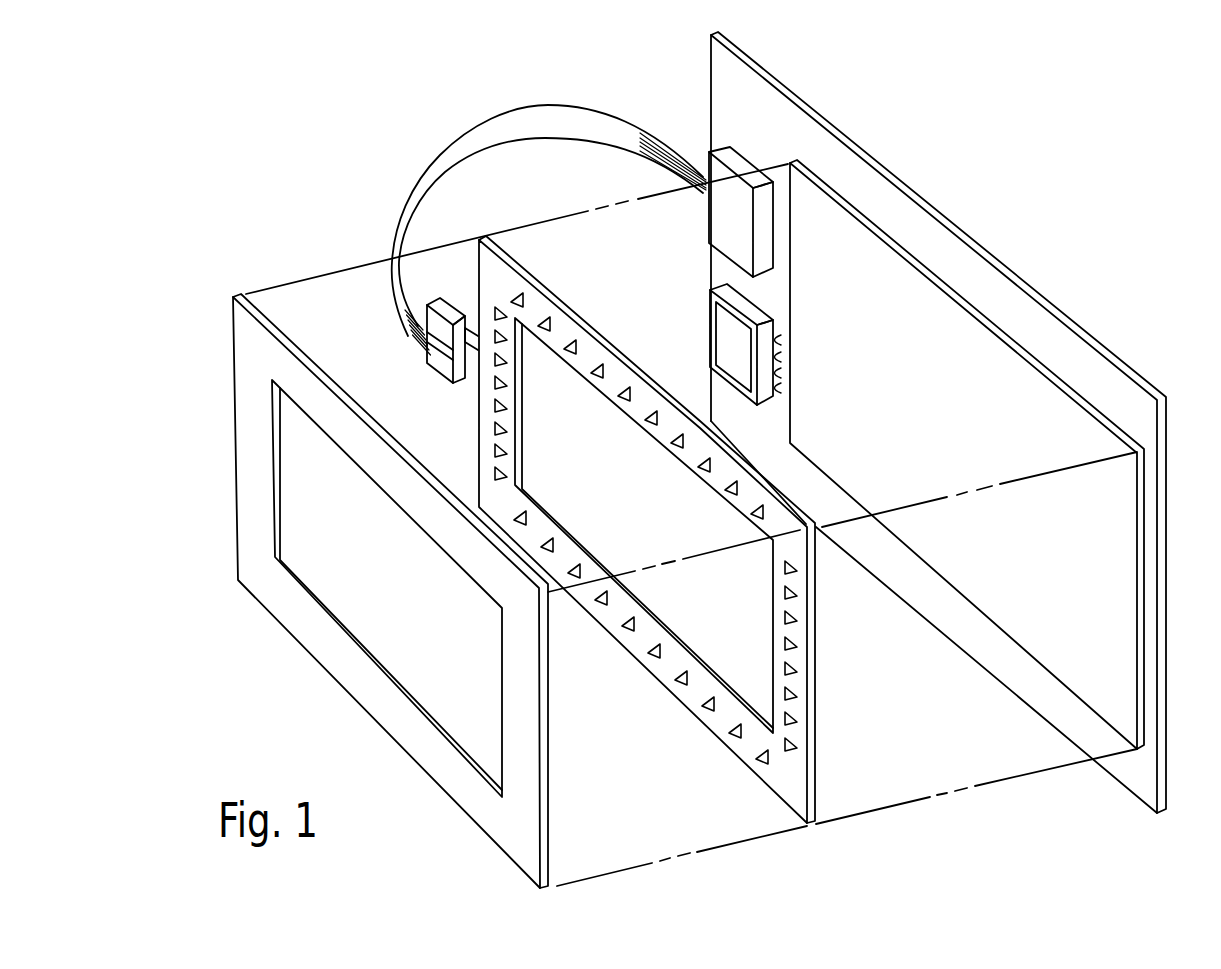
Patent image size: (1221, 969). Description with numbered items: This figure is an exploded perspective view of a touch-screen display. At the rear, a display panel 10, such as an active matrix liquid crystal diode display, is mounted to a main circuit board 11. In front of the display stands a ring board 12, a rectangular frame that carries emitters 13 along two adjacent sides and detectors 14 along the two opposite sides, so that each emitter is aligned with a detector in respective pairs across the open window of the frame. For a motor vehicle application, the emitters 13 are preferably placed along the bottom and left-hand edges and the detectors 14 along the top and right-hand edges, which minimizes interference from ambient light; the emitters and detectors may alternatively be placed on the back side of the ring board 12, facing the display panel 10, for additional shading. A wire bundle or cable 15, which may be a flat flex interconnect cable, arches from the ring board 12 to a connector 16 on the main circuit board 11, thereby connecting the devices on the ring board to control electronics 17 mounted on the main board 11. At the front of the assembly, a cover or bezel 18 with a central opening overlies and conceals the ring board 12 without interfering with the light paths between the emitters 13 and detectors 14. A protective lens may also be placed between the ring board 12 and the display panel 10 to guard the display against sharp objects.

The display panel 10 is at (1043, 643).
The main circuit board 11 is at (1132, 770).
The ring board 12 is at (818, 720).
The emitters 13 is at (484, 304).
The detectors 14 is at (790, 762).
The cable 15 is at (480, 123).
The connector 16 is at (733, 158).
The control electronics 17 is at (752, 313).
The bezel 18 is at (482, 802).